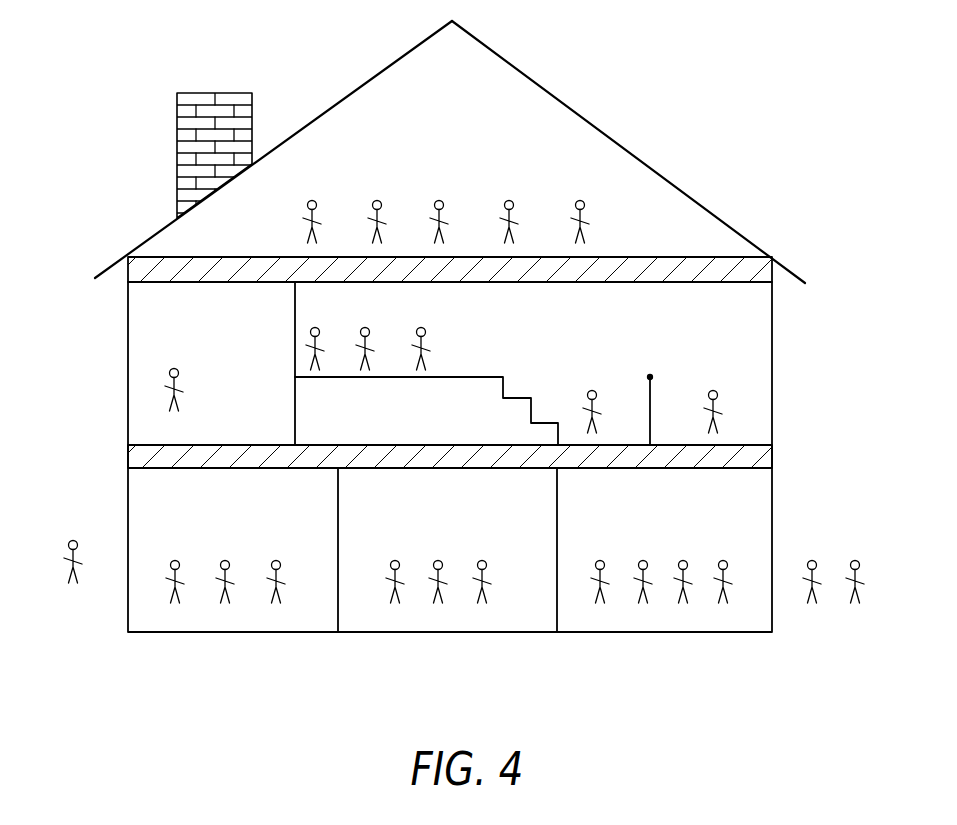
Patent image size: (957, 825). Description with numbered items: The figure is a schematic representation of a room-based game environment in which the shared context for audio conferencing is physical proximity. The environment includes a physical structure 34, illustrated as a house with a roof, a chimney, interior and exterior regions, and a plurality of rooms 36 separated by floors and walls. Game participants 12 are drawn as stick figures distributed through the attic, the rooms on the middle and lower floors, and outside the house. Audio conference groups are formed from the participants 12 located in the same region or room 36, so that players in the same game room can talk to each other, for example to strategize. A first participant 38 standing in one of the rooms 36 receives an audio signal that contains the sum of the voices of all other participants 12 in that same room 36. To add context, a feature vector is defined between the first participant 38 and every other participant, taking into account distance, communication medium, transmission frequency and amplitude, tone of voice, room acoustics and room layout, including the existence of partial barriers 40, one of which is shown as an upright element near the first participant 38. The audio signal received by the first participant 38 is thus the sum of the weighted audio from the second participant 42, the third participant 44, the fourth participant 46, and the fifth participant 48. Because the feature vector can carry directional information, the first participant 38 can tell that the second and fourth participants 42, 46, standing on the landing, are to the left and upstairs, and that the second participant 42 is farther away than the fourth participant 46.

The game participant 12 is at (464, 374).
The physical structure 34 is at (382, 70).
The room 36 is at (448, 353).
The first participant 38 is at (600, 413).
The partial barrier 40 is at (651, 392).
The second participant 42 is at (323, 348).
The third participant 44 is at (373, 348).
The fourth participant 46 is at (429, 348).
The fifth participant 48 is at (714, 390).